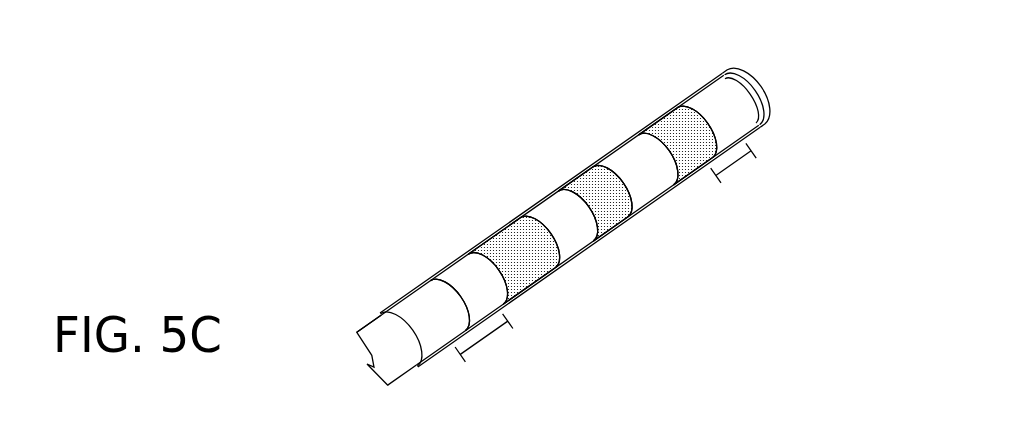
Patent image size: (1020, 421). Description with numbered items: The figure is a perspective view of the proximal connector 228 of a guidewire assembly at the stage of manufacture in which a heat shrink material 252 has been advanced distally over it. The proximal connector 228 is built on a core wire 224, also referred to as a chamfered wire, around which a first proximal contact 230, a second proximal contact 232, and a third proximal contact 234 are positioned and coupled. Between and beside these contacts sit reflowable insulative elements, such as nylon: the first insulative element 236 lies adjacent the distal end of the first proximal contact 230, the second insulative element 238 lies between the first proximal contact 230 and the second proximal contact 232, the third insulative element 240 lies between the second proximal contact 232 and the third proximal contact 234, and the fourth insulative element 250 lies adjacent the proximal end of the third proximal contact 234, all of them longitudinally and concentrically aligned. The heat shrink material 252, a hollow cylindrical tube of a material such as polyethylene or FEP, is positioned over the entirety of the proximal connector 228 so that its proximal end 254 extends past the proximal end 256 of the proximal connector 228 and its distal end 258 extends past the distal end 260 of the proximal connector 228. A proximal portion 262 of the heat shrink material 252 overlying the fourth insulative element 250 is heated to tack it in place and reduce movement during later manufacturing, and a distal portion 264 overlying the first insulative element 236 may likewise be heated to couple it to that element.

The core wire 224 is at (750, 93).
The proximal connector 228 is at (552, 97).
The first proximal contact 230 is at (522, 296).
The second proximal contact 232 is at (607, 236).
The third proximal contact 234 is at (688, 174).
The first insulative element 236 is at (437, 272).
The second insulative element 238 is at (527, 212).
The third insulative element 240 is at (604, 157).
The fourth insulative element 250 is at (686, 97).
The heat shrink material 252 is at (764, 118).
The proximal end of heat shrink material 254 is at (742, 70).
The proximal end of proximal connector 256 is at (722, 72).
The distal end of heat shrink material 258 is at (376, 317).
The distal end of proximal connector 260 is at (417, 286).
The proximal portion of heat shrink material 262 is at (742, 163).
The distal portion of heat shrink material 264 is at (478, 335).